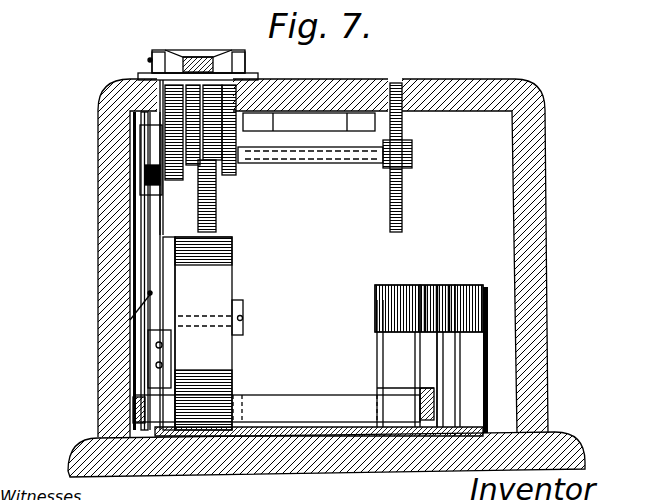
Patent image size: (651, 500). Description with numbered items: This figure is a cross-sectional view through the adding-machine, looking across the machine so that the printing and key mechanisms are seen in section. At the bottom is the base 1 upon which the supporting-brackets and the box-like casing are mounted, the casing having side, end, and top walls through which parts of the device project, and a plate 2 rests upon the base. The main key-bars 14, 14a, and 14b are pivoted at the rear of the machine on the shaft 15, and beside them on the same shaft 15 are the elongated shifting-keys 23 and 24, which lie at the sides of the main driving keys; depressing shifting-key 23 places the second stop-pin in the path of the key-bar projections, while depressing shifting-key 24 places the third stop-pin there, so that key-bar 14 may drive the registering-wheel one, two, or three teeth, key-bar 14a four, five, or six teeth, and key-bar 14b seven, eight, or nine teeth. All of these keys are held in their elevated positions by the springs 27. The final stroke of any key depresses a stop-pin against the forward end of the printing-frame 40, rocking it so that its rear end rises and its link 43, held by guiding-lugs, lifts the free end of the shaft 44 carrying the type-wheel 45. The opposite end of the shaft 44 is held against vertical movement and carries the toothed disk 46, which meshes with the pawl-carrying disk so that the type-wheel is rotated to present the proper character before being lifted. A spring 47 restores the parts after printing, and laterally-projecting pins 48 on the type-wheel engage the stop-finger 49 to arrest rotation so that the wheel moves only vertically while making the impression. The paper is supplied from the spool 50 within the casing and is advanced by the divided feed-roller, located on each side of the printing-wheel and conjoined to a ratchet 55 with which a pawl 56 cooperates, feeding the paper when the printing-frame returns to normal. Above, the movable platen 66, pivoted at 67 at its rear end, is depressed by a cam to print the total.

The base 1 is at (343, 450).
The bed plate 2 is at (267, 440).
The key-bar 14 is at (432, 287).
The key-bar 14a is at (425, 287).
The key-bar 14b is at (456, 290).
The shaft 15 is at (378, 302).
The shifting-key 23 is at (378, 293).
The shifting-key 24 is at (488, 288).
The springs 27 is at (433, 358).
The printing-frame 40 is at (134, 410).
The link 43 is at (165, 292).
The shaft 44 is at (165, 142).
The type-wheel 45 is at (205, 180).
The disk 46 is at (400, 205).
The spring 47 is at (197, 180).
The pins 48 is at (180, 117).
The stop-finger 49 is at (139, 78).
The spool 50 is at (212, 290).
The ratchet 55 is at (100, 110).
The pawl 56 is at (138, 322).
The movable platen 66 is at (197, 56).
The pivot 67 is at (149, 60).